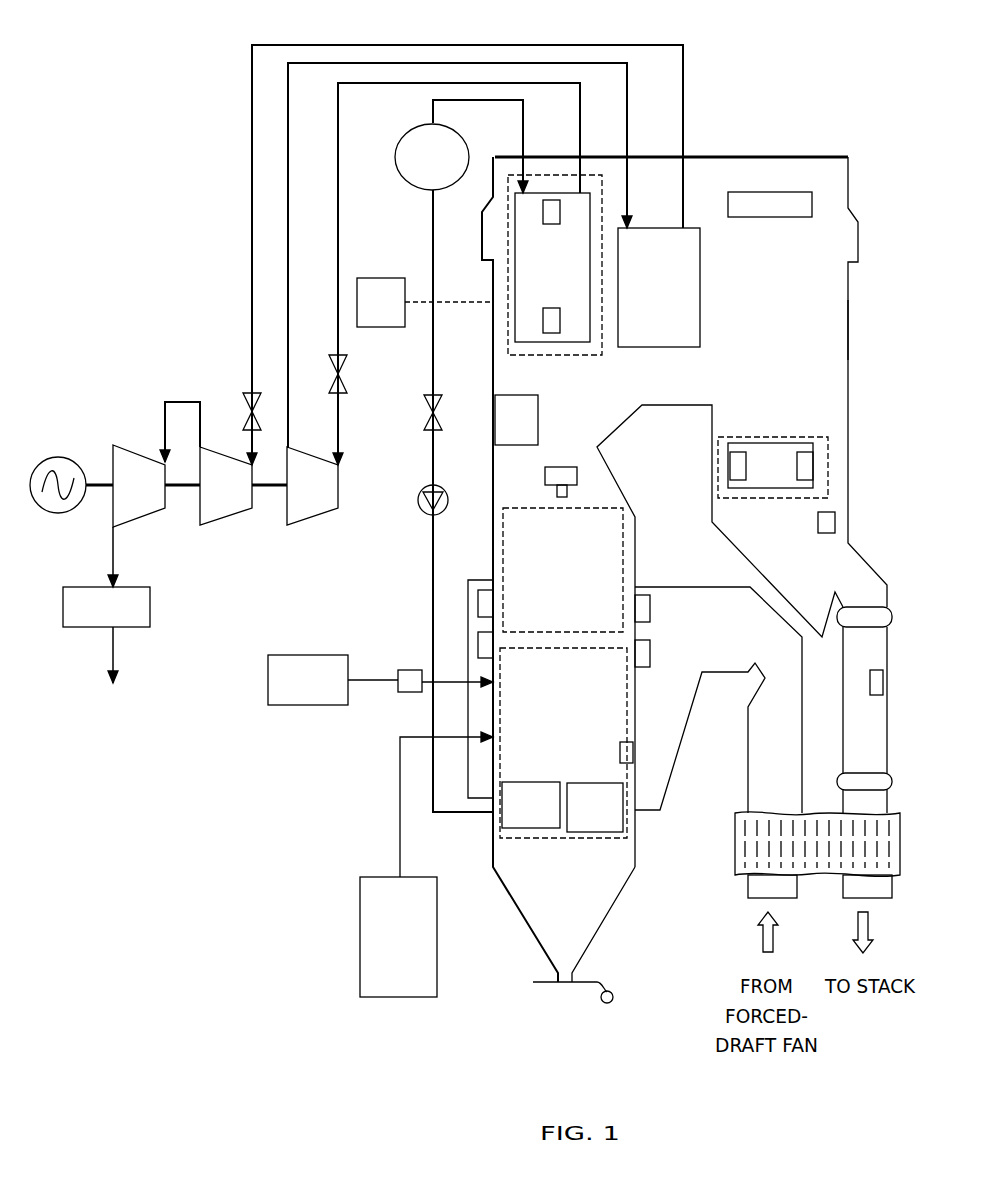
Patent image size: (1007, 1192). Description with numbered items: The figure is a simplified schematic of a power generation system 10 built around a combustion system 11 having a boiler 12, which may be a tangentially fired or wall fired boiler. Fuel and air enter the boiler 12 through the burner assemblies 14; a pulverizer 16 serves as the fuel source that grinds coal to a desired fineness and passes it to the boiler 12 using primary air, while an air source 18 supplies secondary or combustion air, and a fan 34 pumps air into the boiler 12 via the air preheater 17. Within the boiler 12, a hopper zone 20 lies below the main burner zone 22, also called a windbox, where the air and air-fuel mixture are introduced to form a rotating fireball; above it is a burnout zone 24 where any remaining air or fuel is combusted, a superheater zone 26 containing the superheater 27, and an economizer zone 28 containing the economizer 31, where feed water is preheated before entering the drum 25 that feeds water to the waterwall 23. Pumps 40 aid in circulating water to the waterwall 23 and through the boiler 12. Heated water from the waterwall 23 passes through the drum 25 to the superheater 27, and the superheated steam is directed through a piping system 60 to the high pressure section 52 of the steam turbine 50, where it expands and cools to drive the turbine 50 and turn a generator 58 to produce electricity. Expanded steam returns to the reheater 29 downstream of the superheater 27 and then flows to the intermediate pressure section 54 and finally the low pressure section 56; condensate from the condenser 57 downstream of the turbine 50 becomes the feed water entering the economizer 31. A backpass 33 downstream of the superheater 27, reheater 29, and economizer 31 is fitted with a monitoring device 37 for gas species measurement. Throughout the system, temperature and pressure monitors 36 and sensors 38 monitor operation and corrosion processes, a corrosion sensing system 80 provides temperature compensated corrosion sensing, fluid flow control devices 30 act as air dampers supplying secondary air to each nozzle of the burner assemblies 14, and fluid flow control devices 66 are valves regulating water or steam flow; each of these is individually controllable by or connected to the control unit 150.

The power generation system 10 is at (840, 57).
The combustion system 11 is at (853, 145).
The boiler 12 is at (877, 248).
The burner assemblies 14 is at (562, 807).
The pulverizer 16 is at (360, 935).
The air preheater 17 is at (893, 852).
The air source 18 is at (305, 655).
The hopper zone 20 is at (592, 904).
The main burner zone 22 is at (500, 825).
The waterwall 23 is at (635, 565).
The burnout zone 24 is at (503, 530).
The drum 25 is at (432, 157).
The superheater zone 26 is at (550, 175).
The superheater 27 is at (590, 277).
The economizer zone 28 is at (828, 470).
The reheater 29 is at (675, 302).
The fluid flow control devices 30 is at (408, 670).
The economizer 31 is at (782, 475).
The backpass 33 is at (848, 327).
The fan 34 is at (545, 475).
The temperature and pressure monitors 36 is at (770, 200).
The monitoring device 37 is at (835, 522).
The sensors 38 is at (650, 605).
The pumps 40 is at (420, 505).
The steam turbine 50 is at (338, 487).
The high pressure section 52 is at (322, 500).
The intermediate pressure section 54 is at (235, 500).
The low pressure section 56 is at (150, 500).
The condenser 57 is at (120, 615).
The generator 58 is at (60, 457).
The piping system 60 is at (228, 257).
The fluid flow control devices 66 is at (258, 425).
The corrosion sensing system 80 is at (543, 210).
The control unit 150 is at (378, 290).